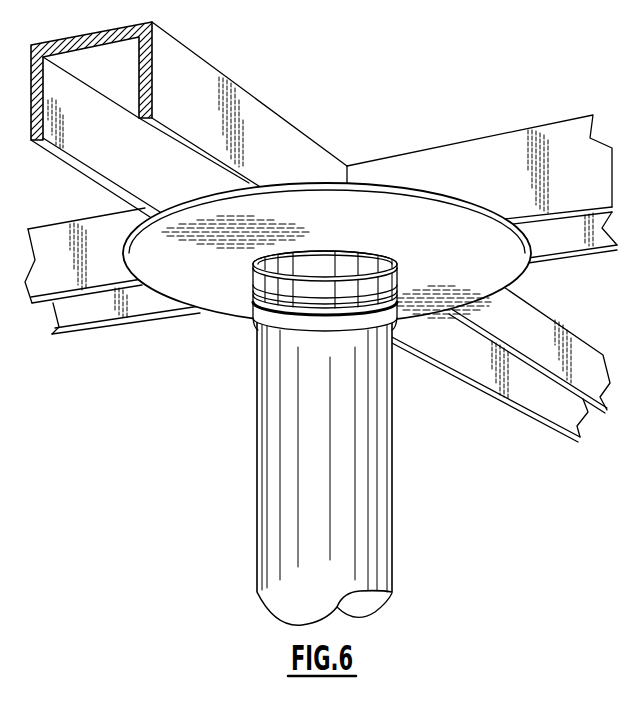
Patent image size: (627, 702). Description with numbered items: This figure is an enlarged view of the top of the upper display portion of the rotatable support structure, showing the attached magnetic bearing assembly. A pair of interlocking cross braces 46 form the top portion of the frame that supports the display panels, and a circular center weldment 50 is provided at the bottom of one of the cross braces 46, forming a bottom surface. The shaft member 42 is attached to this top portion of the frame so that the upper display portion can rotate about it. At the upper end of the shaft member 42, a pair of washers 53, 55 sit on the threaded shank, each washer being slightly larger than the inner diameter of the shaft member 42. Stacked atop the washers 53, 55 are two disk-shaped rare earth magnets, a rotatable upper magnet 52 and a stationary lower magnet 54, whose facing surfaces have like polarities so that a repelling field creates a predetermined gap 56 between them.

The shaft member 42 is at (362, 507).
The cross braces 46 is at (567, 132).
The center weldment 50 is at (372, 217).
The upper magnet 52 is at (253, 272).
The washer 53 is at (368, 306).
The lower magnet 54 is at (252, 303).
The washer 55 is at (397, 325).
The gap 56 is at (318, 272).